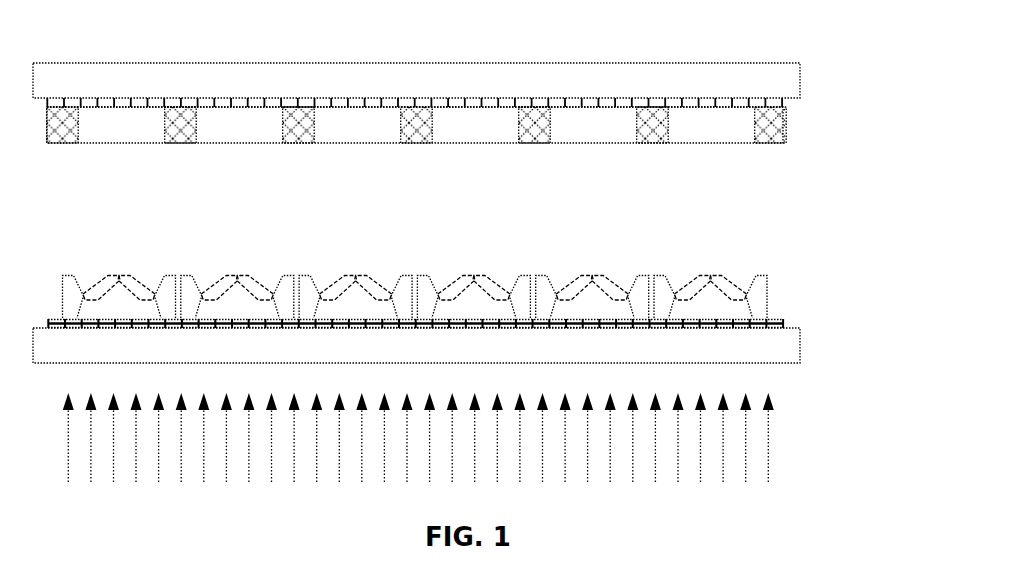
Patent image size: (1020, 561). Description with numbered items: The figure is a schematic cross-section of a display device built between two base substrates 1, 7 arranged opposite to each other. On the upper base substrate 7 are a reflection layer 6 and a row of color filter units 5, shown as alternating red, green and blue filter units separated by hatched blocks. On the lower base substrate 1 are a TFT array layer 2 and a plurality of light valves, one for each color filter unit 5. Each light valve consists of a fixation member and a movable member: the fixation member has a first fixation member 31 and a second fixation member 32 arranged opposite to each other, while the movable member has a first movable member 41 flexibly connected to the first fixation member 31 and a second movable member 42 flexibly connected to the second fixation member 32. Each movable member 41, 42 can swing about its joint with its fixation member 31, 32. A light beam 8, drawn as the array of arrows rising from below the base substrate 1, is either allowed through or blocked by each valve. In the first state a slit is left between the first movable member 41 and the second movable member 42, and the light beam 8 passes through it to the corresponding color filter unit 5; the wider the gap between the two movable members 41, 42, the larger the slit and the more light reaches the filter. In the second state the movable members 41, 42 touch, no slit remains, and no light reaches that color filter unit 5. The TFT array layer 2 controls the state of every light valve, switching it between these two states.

The base substrate 1 is at (802, 345).
The TFT array layer 2 is at (785, 323).
The first fixation member 31 is at (663, 276).
The second fixation member 32 is at (768, 290).
The first movable member 41 is at (697, 277).
The second movable member 42 is at (730, 278).
The color filter unit 5 is at (782, 125).
The reflection layer 6 is at (783, 104).
The base substrate 7 is at (770, 70).
The light beam 8 is at (770, 437).